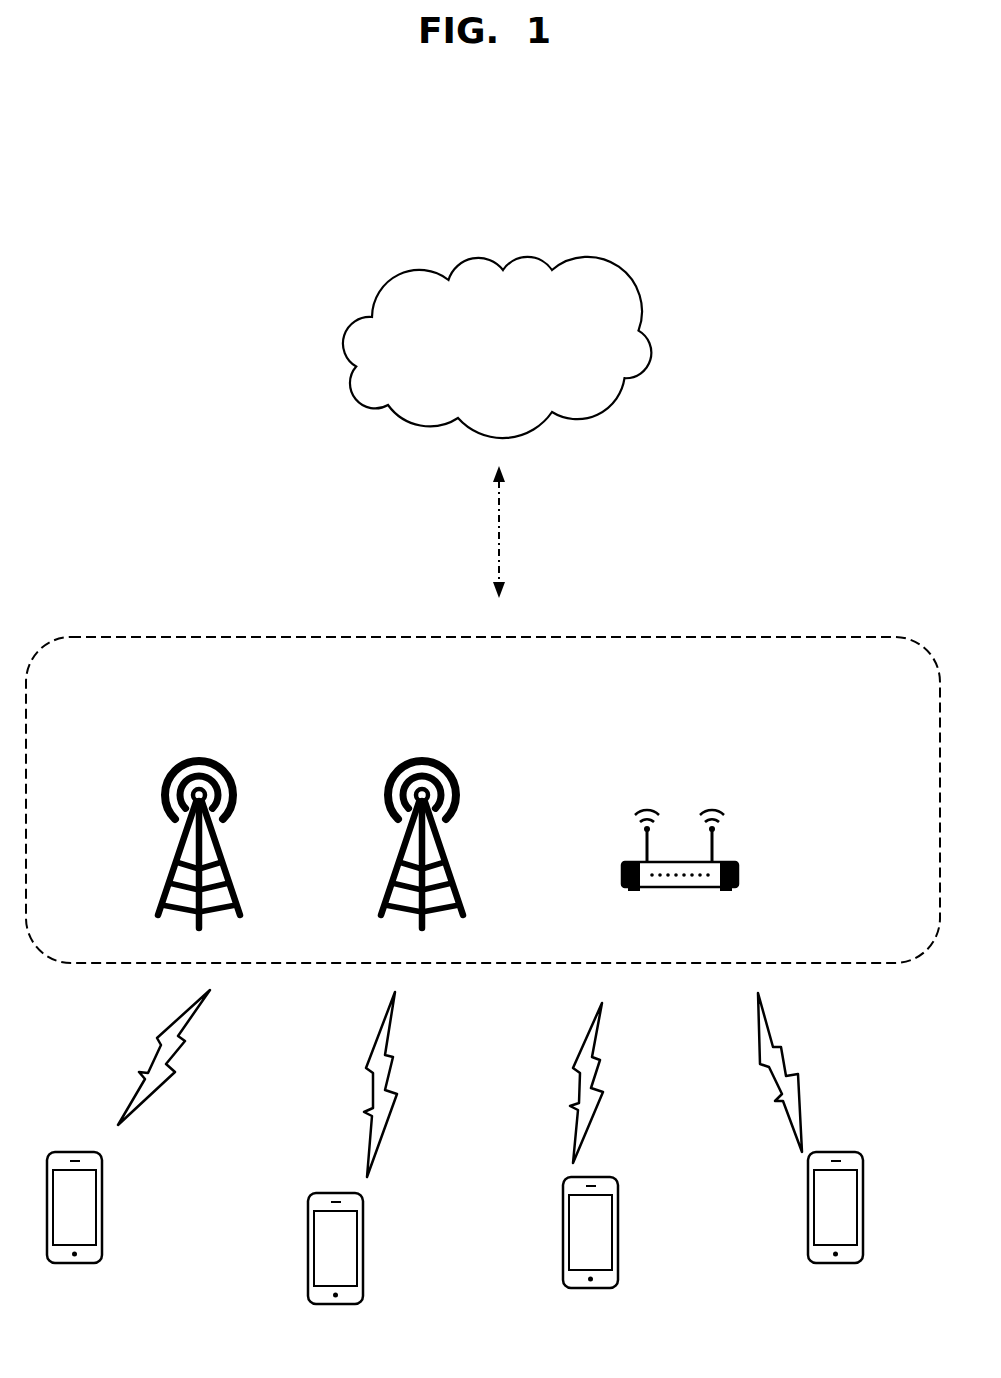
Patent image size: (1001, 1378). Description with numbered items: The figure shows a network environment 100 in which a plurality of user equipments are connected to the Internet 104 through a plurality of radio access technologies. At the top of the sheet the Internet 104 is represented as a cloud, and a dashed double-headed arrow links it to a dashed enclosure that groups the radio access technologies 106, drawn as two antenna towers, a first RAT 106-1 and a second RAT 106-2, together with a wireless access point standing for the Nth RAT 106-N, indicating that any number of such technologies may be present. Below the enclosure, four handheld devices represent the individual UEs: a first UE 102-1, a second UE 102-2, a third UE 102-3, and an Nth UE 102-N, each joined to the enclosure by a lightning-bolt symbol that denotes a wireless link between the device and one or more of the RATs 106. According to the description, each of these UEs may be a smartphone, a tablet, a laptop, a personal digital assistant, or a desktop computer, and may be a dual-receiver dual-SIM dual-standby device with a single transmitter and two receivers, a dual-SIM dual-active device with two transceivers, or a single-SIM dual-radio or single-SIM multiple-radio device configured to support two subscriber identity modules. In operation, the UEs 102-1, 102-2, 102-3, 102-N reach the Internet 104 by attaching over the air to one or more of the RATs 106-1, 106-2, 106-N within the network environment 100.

The network environment 100 is at (184, 164).
The Internet 104 is at (552, 356).
The radio access technologies 106 is at (788, 638).
The radio access technology 106-1 is at (222, 764).
The radio access technology 106-2 is at (440, 764).
The radio access technology 106-N is at (721, 806).
The user equipment 102-1 is at (70, 1152).
The user equipment 102-2 is at (318, 1193).
The user equipment 102-3 is at (617, 1178).
The user equipment 102-N is at (830, 1152).